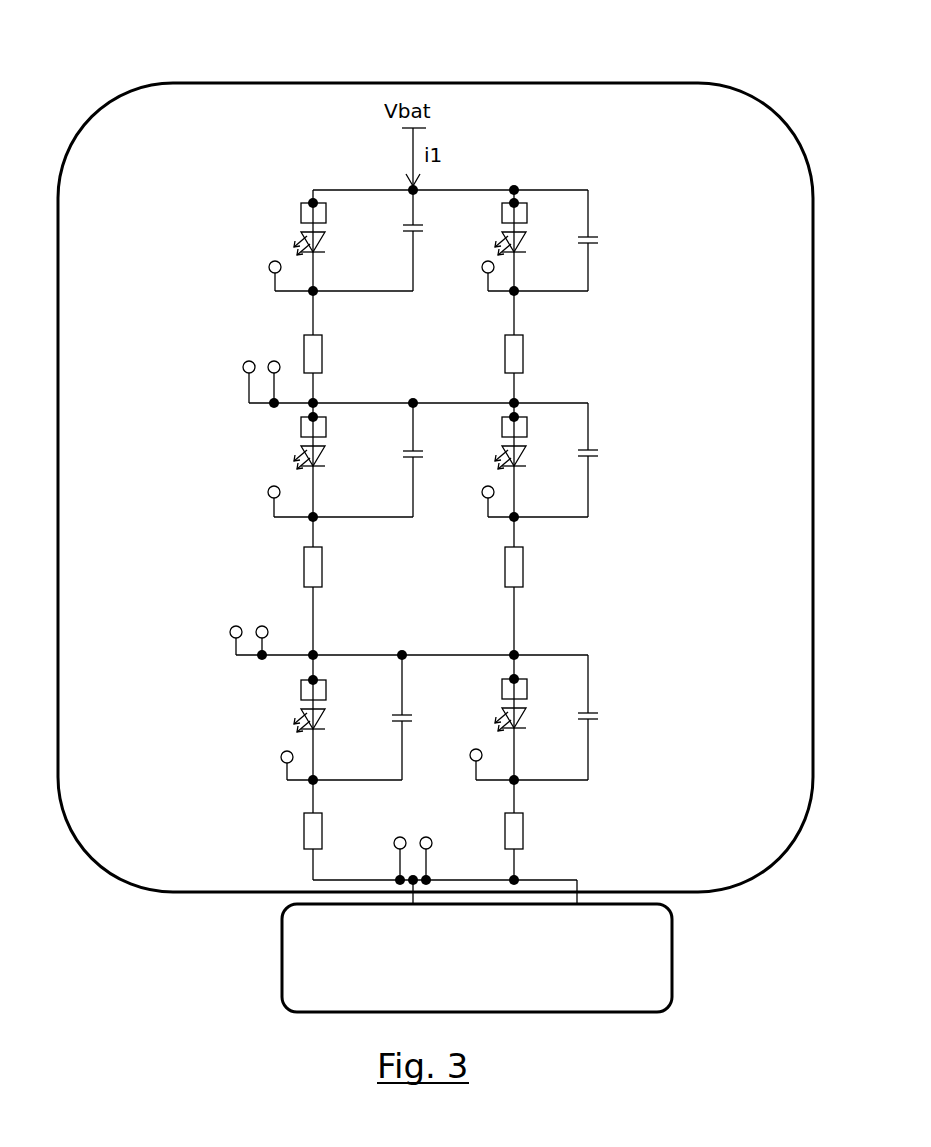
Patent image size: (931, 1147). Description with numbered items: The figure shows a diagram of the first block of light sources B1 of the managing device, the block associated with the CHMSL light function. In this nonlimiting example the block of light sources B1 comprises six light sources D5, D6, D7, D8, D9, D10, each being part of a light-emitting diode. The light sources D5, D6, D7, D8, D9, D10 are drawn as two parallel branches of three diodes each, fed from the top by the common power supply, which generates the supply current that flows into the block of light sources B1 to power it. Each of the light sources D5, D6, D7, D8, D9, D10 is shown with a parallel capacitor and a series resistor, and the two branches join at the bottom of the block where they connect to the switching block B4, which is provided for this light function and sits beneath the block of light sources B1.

The block of light sources B1 is at (371, 83).
The switching block B4 is at (477, 958).
The light source D5 is at (328, 226).
The light source D6 is at (328, 440).
The light source D7 is at (529, 226).
The light source D8 is at (529, 440).
The light source D9 is at (529, 702).
The light source D10 is at (334, 703).